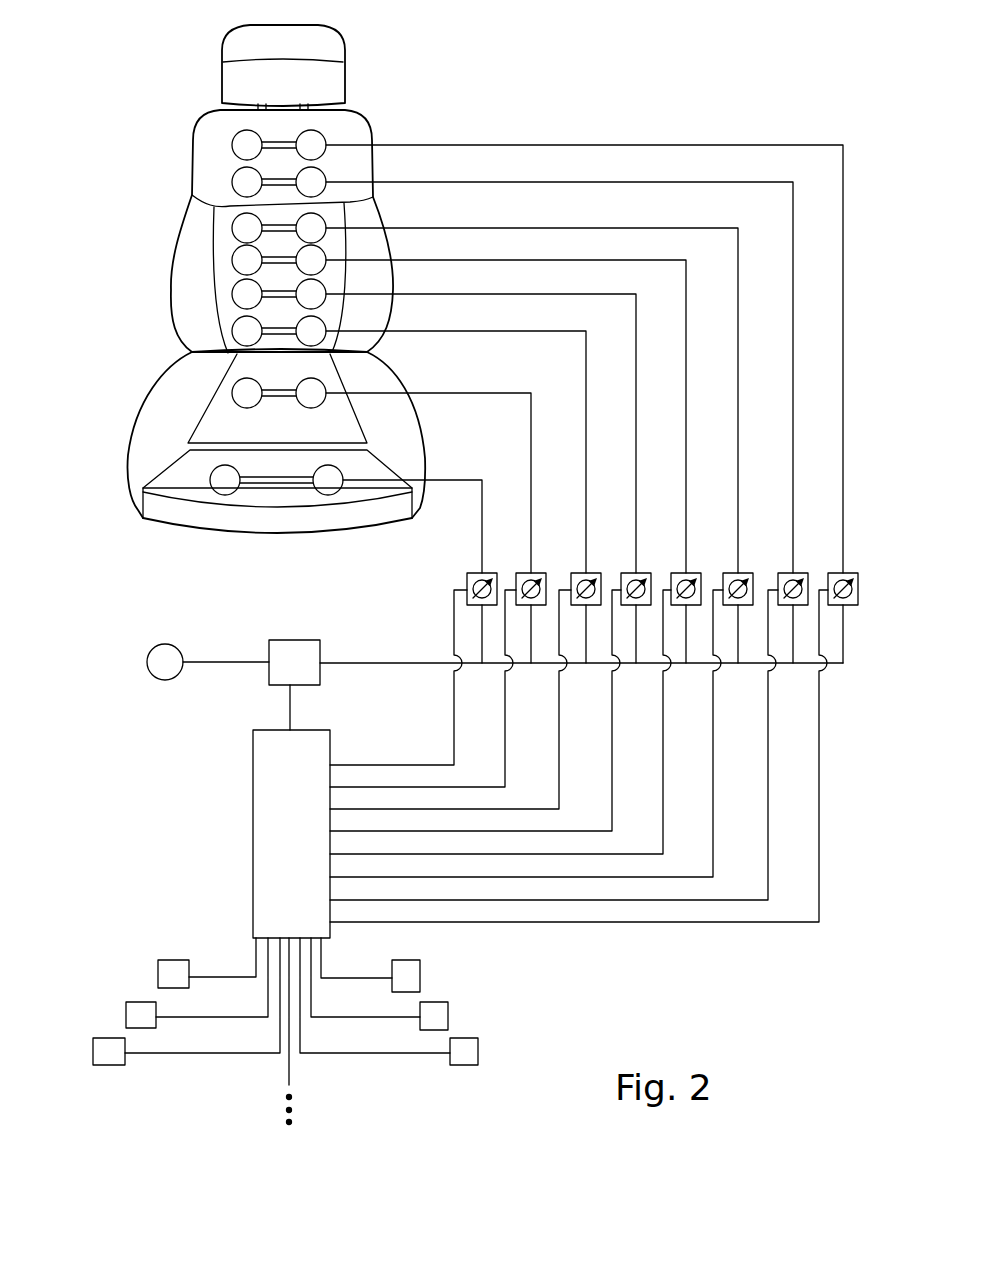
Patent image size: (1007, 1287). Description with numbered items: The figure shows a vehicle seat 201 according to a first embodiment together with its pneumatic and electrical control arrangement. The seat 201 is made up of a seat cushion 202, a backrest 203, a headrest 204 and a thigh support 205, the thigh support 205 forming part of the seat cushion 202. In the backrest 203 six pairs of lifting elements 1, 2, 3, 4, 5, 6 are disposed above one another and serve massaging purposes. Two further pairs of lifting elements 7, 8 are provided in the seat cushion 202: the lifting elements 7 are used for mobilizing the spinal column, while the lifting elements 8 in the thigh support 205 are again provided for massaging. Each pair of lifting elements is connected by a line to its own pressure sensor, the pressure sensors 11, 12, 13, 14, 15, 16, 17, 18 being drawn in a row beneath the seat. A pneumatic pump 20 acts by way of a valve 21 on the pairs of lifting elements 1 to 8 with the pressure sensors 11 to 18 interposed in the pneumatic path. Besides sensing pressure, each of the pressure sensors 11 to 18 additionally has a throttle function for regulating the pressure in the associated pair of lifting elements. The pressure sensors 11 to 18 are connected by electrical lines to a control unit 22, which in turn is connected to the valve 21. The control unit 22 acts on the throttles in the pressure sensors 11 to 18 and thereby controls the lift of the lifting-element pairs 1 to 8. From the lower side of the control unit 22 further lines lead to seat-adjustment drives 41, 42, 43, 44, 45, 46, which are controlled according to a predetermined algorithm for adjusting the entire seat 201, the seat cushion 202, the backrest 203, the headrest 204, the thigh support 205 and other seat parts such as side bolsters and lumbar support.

The lifting element pair 1 is at (279, 145).
The lifting element pair 2 is at (279, 182).
The lifting element pair 3 is at (279, 228).
The lifting element pair 4 is at (279, 260).
The lifting element pair 5 is at (279, 294).
The lifting element pair 6 is at (279, 331).
The lifting element pair 7 is at (279, 393).
The lifting element pair 8 is at (276, 480).
The pressure sensor 11 is at (833, 573).
The pressure sensor 12 is at (783, 573).
The pressure sensor 13 is at (728, 573).
The pressure sensor 14 is at (676, 573).
The pressure sensor 15 is at (626, 573).
The pressure sensor 16 is at (576, 573).
The pressure sensor 17 is at (521, 573).
The pressure sensor 18 is at (470, 573).
The pneumatic pump 20 is at (181, 650).
The valve 21 is at (320, 651).
The control unit 22 is at (253, 775).
The seat-adjustment drive 41 is at (420, 966).
The seat-adjustment drive 42 is at (448, 1010).
The seat-adjustment drive 43 is at (462, 1065).
The seat-adjustment drive 44 is at (177, 960).
The seat-adjustment drive 45 is at (126, 1003).
The seat-adjustment drive 46 is at (115, 1065).
The seat 201 is at (316, 295).
The seat cushion 202 is at (217, 413).
The backrest 203 is at (193, 224).
The headrest 204 is at (345, 83).
The thigh support 205 is at (222, 522).